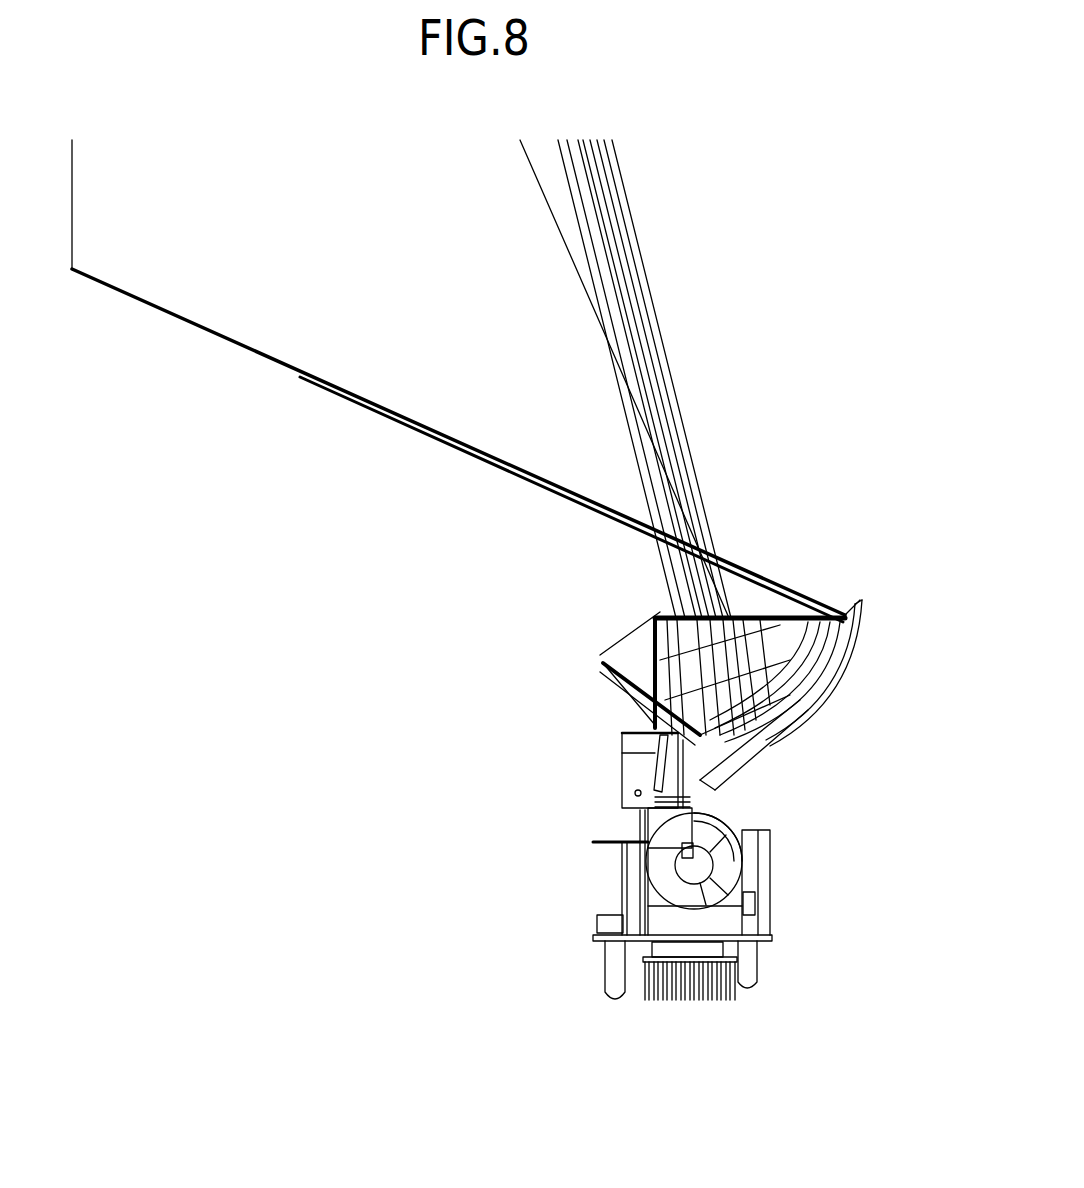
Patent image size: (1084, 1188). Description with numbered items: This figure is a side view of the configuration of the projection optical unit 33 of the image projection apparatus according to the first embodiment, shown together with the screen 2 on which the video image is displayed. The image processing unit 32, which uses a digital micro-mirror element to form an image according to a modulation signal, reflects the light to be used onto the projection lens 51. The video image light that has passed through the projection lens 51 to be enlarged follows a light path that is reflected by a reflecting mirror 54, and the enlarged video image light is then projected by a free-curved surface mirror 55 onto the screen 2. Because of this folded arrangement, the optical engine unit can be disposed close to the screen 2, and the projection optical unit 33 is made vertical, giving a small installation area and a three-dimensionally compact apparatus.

The screen 2 is at (72, 219).
The image processing unit 32 is at (730, 1016).
The projection optical unit 33 is at (540, 829).
The projection lens 51 is at (622, 770).
The reflecting mirror 54 is at (640, 628).
The free-curved surface mirror 55 is at (826, 683).